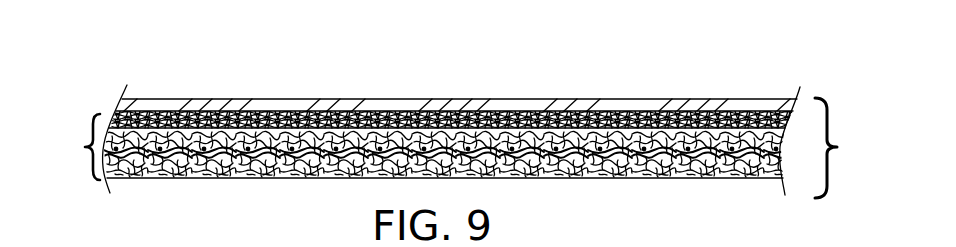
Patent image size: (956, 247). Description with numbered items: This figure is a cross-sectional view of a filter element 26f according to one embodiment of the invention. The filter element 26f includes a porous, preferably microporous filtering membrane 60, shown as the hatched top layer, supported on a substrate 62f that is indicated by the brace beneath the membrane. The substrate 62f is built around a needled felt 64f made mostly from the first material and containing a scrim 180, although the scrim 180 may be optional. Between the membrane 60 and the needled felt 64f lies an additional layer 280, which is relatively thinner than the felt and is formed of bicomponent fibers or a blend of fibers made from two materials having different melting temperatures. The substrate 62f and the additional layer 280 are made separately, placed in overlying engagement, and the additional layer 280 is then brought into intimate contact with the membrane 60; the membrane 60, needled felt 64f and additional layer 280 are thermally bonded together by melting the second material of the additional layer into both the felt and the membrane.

The filtering membrane 60 is at (397, 106).
The additional layer 280 is at (202, 117).
The scrim 180 is at (558, 125).
The needled felt 64f is at (520, 178).
The substrate 62f is at (85, 147).
The filter element 26f is at (840, 147).